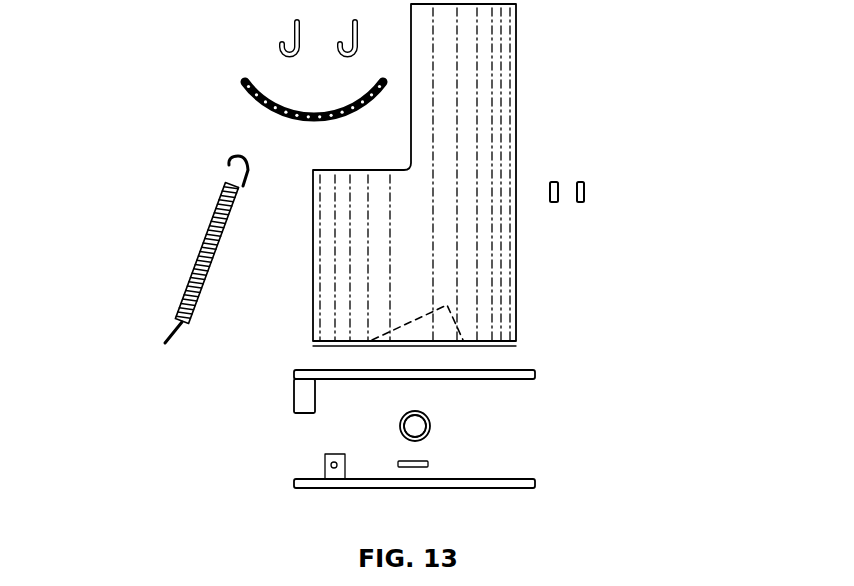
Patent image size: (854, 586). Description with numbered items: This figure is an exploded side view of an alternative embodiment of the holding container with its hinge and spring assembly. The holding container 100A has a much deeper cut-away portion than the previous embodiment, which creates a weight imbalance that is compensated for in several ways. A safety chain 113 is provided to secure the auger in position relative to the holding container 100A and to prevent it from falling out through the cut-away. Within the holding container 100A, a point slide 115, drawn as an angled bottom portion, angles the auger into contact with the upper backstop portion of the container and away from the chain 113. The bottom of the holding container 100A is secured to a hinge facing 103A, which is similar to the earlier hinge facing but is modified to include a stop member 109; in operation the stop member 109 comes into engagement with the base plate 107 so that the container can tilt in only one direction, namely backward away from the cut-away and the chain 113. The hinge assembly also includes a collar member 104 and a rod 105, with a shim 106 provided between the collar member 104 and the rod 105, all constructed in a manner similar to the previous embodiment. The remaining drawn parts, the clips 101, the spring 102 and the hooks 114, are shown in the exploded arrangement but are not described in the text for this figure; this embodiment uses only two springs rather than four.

The holding container 100A is at (485, 93).
The clip 101 is at (590, 192).
The spring 102 is at (189, 245).
The hinge facing 103A is at (540, 373).
The collar member 104 is at (393, 425).
The rod 105 is at (424, 424).
The shim 106 is at (433, 464).
The base plate 107 is at (498, 489).
The stop member 109 is at (286, 398).
The safety chain 113 is at (239, 95).
The hooks 114 is at (291, 32).
The point slide 115 is at (462, 317).